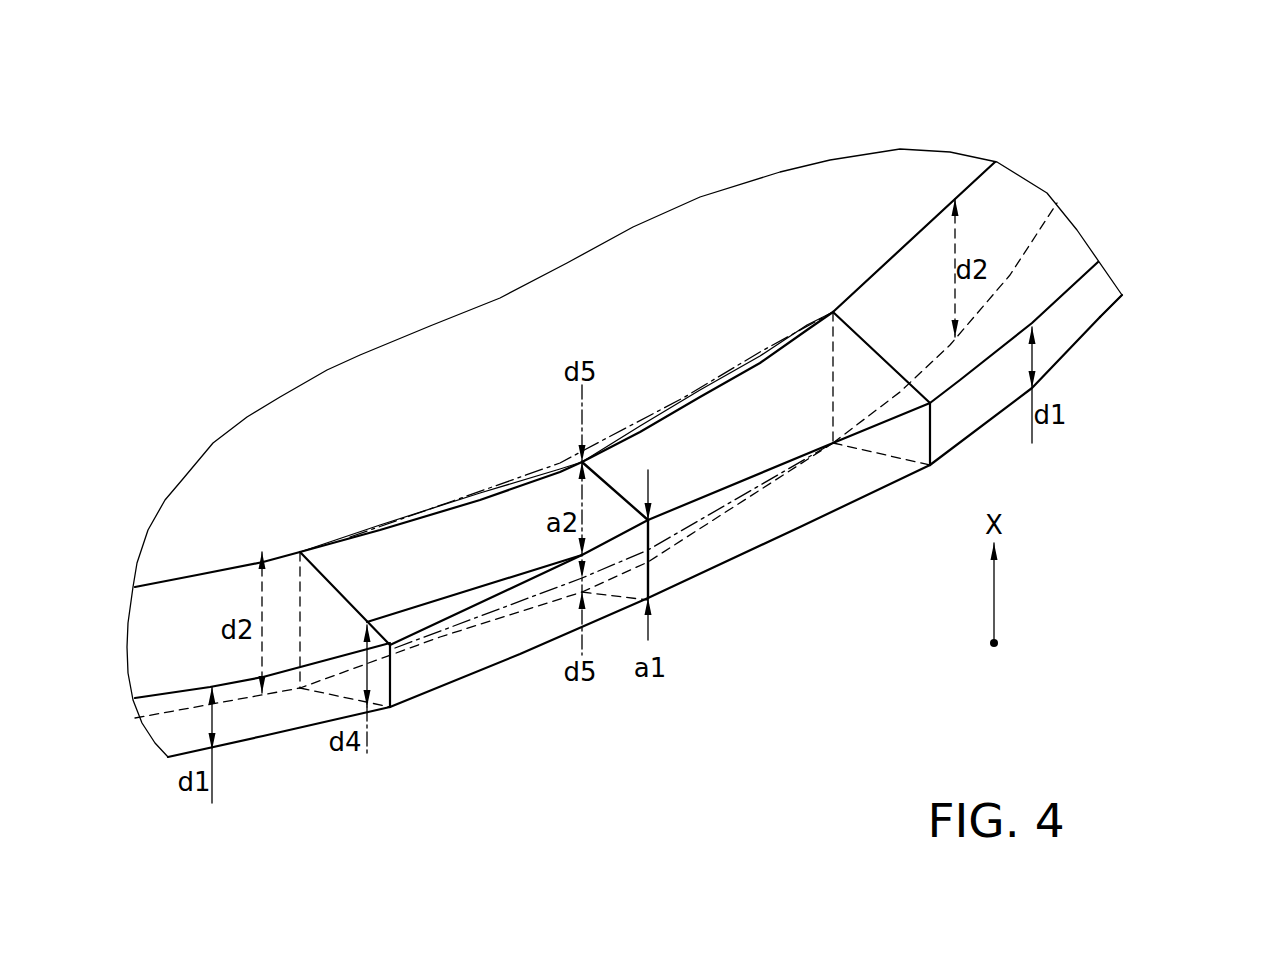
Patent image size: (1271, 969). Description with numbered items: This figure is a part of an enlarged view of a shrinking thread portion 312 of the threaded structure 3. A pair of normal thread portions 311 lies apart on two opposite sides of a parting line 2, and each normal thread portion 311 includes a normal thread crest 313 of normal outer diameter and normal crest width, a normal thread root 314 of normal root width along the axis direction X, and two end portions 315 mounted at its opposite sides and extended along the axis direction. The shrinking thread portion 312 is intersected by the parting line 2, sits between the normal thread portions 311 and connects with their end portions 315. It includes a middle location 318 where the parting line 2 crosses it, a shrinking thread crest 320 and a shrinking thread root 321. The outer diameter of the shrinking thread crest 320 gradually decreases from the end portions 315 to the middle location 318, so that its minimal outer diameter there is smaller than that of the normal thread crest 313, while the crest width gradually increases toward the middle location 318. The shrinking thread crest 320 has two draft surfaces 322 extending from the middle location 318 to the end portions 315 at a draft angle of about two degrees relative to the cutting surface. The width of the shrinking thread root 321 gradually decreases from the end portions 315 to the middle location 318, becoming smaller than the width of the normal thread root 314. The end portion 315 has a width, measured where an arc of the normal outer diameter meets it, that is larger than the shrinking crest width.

The parting line 2 is at (651, 572).
The wearable device housing 3 is at (1102, 317).
The normal thread portion 311 is at (1035, 207).
The shrinking thread portion 312 is at (488, 650).
The normal thread crest 313 is at (245, 725).
The normal thread root 314 is at (197, 597).
The end portion 315 is at (337, 638).
The middle location 318 is at (620, 490).
The shrinking thread crest 320 is at (545, 630).
The shrinking thread root 321 is at (468, 512).
The draft surface 322 is at (433, 673).